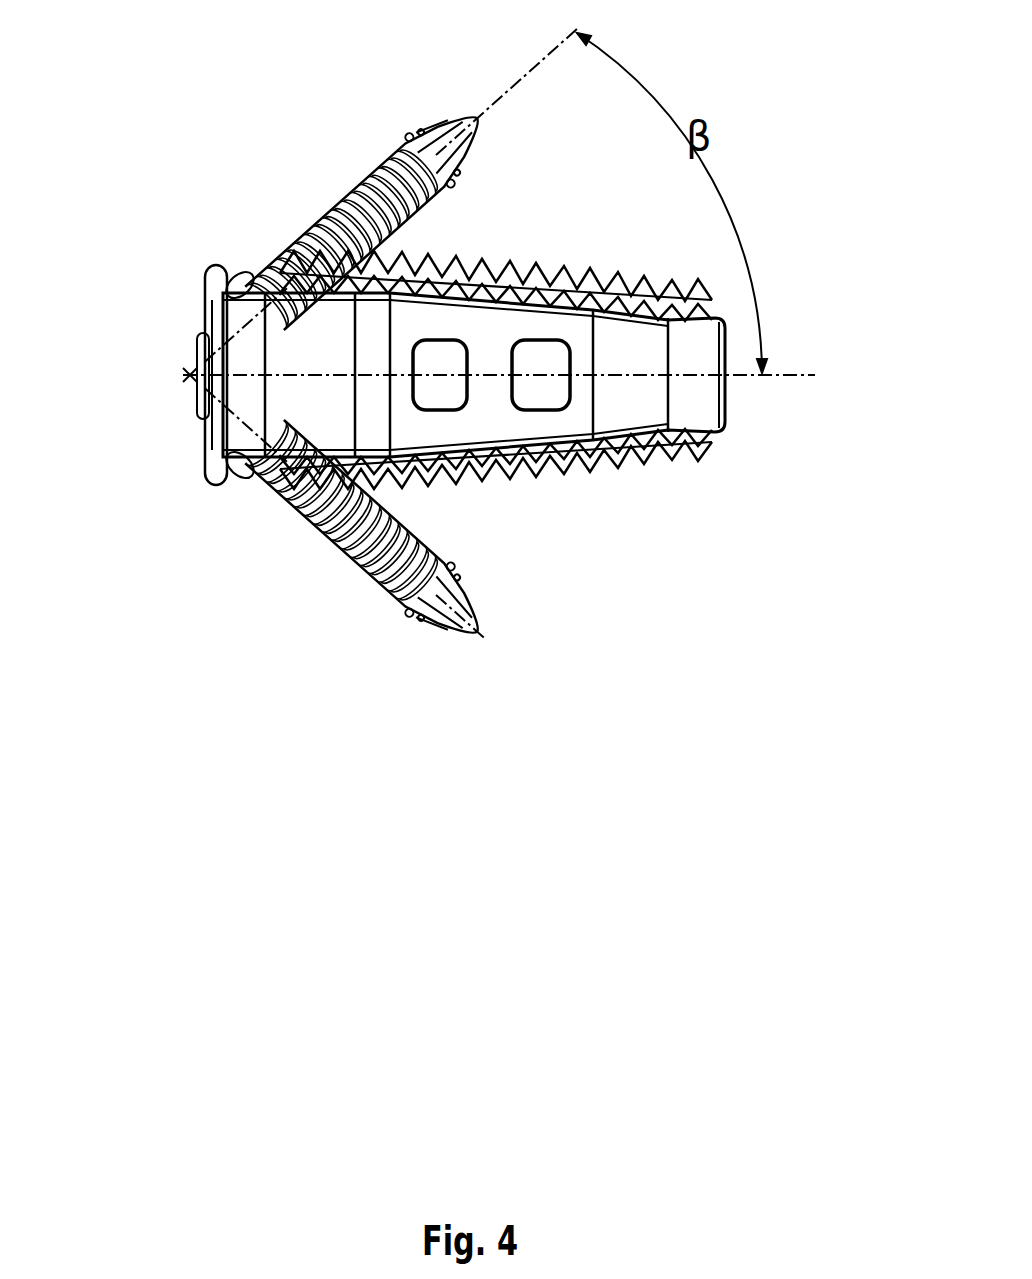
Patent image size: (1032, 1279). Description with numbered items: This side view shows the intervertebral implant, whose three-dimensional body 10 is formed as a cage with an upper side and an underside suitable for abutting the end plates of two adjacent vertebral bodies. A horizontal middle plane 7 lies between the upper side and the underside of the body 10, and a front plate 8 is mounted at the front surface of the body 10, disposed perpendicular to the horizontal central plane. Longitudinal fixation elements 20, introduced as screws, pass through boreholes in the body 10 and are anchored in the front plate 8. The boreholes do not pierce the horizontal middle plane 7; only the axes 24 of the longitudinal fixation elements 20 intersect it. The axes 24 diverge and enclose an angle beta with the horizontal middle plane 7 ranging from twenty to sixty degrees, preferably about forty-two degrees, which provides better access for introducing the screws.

The horizontal middle plane 7 is at (310, 373).
The front plate 8 is at (245, 380).
The three-dimensional body 10 is at (713, 477).
The longitudinal fixation elements 20 is at (472, 336).
The axes 24 is at (383, 158).